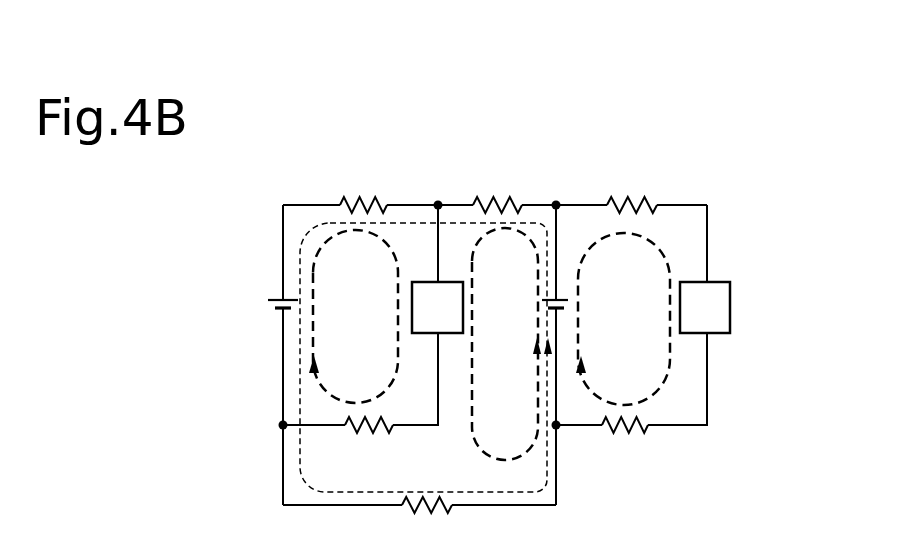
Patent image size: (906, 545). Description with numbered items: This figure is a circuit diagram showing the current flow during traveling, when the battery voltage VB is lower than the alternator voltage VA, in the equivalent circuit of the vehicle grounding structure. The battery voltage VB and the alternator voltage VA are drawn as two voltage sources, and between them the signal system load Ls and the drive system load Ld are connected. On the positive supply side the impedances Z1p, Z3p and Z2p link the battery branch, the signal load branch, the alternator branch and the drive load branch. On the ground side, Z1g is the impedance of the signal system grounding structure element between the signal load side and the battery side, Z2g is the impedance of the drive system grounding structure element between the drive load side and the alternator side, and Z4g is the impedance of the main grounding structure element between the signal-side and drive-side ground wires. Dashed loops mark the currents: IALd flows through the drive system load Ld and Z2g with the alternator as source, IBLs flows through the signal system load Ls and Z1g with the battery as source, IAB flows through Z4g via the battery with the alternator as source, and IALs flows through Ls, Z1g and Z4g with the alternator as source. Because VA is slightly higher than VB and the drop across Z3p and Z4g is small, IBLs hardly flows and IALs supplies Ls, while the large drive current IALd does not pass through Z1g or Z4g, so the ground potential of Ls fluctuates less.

The power-side impedance on the battery branch Z1p is at (363, 184).
The power-side impedance between signal and drive branches Z3p is at (497, 184).
The power-side impedance on the alternator branch Z2p is at (632, 184).
The impedance of the signal system grounding structure element Z1g is at (369, 445).
The impedance of the drive system grounding structure element Z2g is at (625, 445).
The impedance of the main grounding structure element Z4g is at (427, 521).
The signal system load Ls is at (437, 307).
The drive system load Ld is at (705, 307).
The battery voltage VB is at (270, 303).
The alternator voltage VA is at (542, 306).
The current flowing through the main grounding impedance via the battery IAB is at (426, 357).
The battery-sourced signal load current IBLs is at (353, 316).
The alternator-sourced signal load current IALs is at (506, 344).
The alternator-sourced drive load current IALd is at (623, 319).